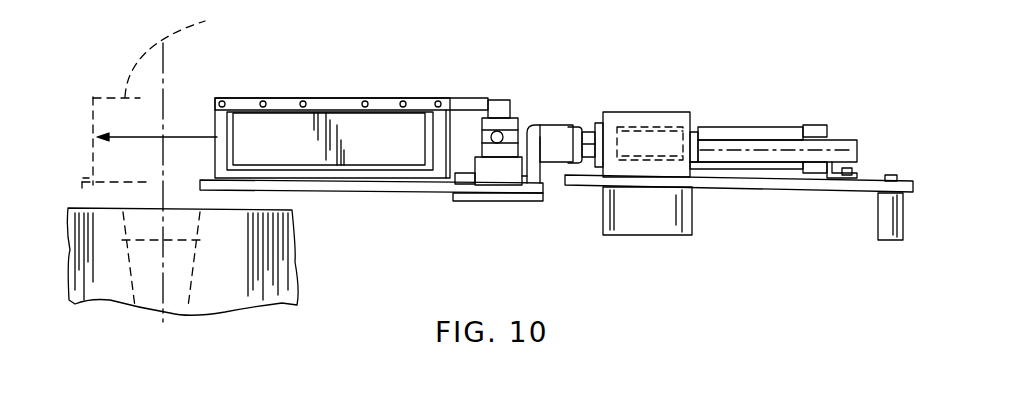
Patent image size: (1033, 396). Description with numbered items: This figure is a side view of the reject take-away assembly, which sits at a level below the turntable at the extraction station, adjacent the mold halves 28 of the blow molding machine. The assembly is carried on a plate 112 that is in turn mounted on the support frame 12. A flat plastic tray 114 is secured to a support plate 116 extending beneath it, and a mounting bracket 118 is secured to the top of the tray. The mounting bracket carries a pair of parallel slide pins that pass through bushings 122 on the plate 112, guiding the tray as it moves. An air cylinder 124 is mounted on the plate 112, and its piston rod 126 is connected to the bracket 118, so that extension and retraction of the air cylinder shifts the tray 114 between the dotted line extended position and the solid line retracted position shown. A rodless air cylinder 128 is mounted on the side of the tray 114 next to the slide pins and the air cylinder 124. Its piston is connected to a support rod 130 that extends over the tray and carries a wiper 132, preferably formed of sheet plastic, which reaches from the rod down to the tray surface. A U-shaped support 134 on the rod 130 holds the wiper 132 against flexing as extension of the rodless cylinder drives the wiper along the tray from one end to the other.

The support frame 12 is at (878, 216).
The mold halves 28 is at (107, 292).
The plate 112 is at (870, 178).
The flat plastic tray 114 is at (368, 194).
The support plate 116 is at (492, 201).
The mounting bracket 118 is at (558, 127).
The bushings 122 is at (648, 112).
The air cylinder 124 is at (752, 128).
The piston rod 126 is at (590, 131).
The rodless air cylinder 128 is at (518, 115).
The support rod 130 is at (228, 97).
The wiper 132 is at (298, 145).
The U-shaped support 134 is at (352, 164).